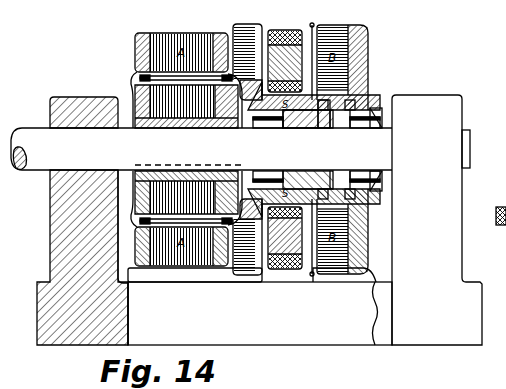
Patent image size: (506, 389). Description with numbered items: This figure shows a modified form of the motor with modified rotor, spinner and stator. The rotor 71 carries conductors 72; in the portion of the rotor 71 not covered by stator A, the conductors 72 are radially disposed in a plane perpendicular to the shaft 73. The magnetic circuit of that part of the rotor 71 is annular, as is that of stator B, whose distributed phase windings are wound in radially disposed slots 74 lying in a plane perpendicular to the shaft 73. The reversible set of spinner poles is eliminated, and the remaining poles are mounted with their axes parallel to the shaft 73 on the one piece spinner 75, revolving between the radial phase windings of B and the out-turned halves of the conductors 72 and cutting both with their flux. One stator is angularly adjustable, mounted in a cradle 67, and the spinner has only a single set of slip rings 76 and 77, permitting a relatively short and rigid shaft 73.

The cradle 67 is at (313, 269).
The rotor 71 is at (140, 78).
The conductors 72 is at (262, 26).
The shaft 73 is at (42, 175).
The slots 74 is at (253, 130).
The one piece spinner 75 is at (327, 118).
The slip ring 76 is at (310, 120).
The slip ring 77 is at (342, 118).